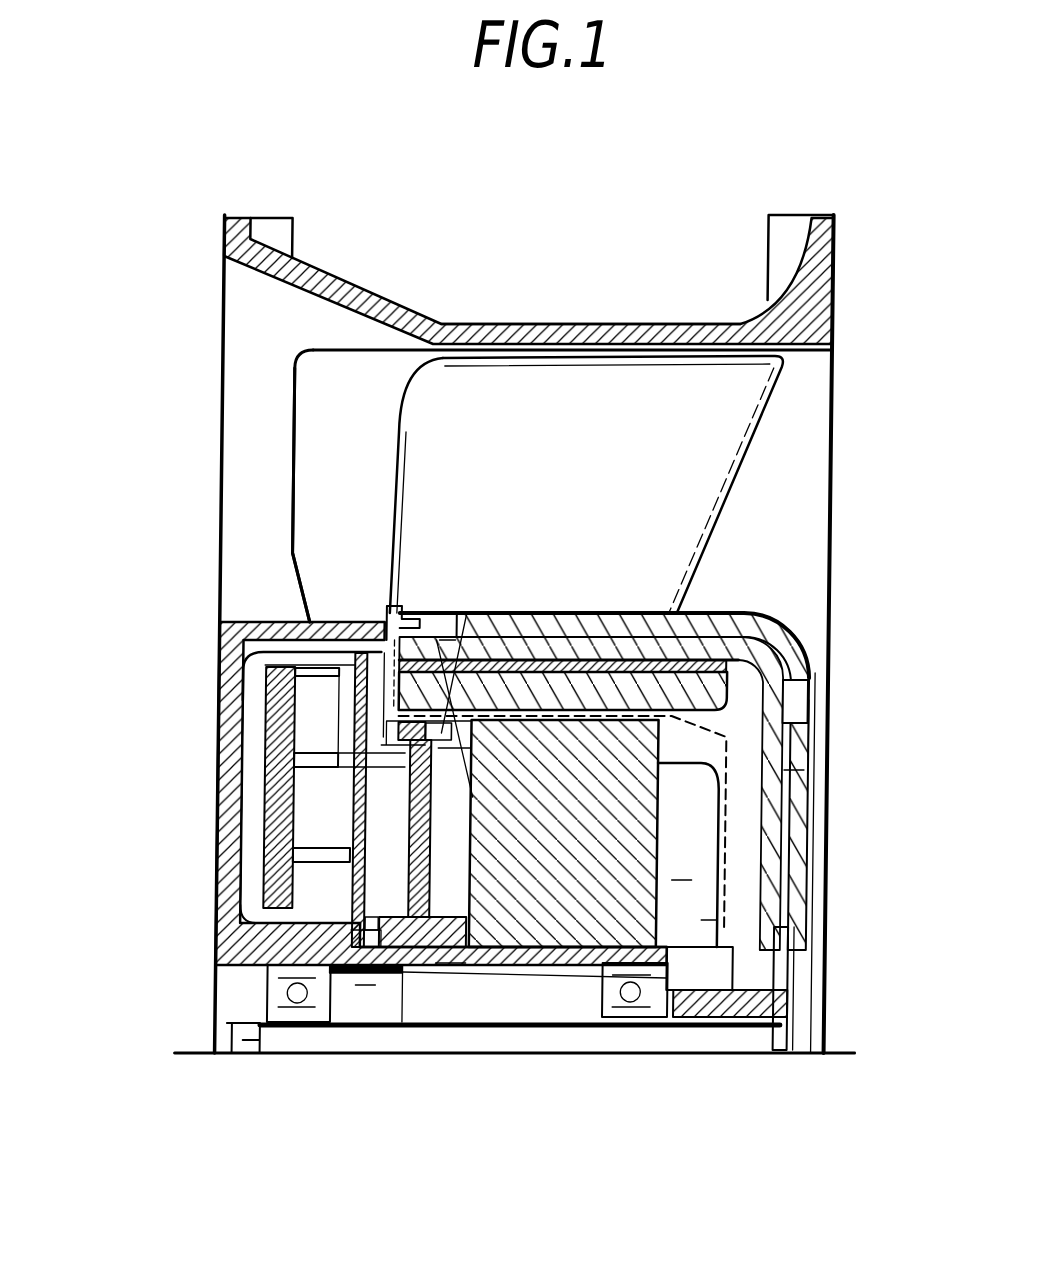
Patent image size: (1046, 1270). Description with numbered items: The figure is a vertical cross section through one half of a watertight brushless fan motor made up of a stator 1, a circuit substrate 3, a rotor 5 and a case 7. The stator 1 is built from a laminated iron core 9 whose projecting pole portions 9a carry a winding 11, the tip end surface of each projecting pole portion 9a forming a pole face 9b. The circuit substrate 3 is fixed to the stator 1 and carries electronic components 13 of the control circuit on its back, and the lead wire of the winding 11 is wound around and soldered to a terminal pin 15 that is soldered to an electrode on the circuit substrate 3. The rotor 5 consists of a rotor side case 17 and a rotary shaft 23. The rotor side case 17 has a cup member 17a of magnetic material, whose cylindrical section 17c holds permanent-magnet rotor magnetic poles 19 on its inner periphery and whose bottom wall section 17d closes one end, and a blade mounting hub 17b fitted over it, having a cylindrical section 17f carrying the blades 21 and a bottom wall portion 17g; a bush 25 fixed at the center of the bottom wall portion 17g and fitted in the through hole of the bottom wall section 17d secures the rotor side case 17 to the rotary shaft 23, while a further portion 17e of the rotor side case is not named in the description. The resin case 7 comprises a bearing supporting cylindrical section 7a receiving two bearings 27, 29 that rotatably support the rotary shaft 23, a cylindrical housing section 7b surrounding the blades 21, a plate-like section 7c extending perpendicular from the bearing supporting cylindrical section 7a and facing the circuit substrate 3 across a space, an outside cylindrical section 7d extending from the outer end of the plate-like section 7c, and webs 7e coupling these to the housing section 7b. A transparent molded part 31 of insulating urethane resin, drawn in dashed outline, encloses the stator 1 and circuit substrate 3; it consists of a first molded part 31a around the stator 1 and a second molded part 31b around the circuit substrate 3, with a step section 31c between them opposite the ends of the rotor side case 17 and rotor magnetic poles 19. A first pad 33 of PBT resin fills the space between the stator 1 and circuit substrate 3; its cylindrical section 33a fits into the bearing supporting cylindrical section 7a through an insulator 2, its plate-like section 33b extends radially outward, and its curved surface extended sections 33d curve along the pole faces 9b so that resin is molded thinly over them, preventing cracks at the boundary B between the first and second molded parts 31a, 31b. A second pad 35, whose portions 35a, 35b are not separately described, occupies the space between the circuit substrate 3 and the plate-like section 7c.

The stator 1 is at (485, 972).
The insulator 2 is at (368, 972).
The circuit substrate 3 is at (389, 628).
The rotor 5 is at (816, 637).
The case 7 is at (250, 408).
The bearing supporting cylindrical section 7a is at (512, 965).
The housing section 7b is at (506, 342).
The plate-like section 7c is at (246, 772).
The outside cylindrical section 7d is at (269, 622).
The webs 7e is at (220, 481).
The iron core 9 is at (654, 819).
The projecting pole portions 9a is at (605, 850).
The pole face 9b is at (672, 610).
The winding 11 is at (716, 927).
The electronic components 13 is at (310, 797).
The terminal pin 15 is at (407, 757).
The rotor side case 17 is at (673, 766).
The cup member 17a is at (810, 608).
The blade mounting hub 17b is at (792, 661).
The cylindrical section 17c is at (542, 700).
The bottom wall section 17d is at (686, 890).
The bracket lower portion 17e is at (798, 977).
The cylindrical section 17f is at (641, 615).
The bottom wall portion 17g is at (800, 783).
The rotor magnetic poles 19 is at (507, 614).
The blades 21 is at (617, 398).
The rotary shaft 23 is at (638, 1025).
The bush 25 is at (808, 1000).
The bearing 27 is at (282, 997).
The bearing 29 is at (649, 1010).
The molded part 31 is at (315, 744).
The first molded part 31a is at (548, 612).
The second molded part 31b is at (256, 722).
The step section 31c is at (424, 612).
The first pad 33 is at (452, 802).
The cylindrical section 33a is at (445, 972).
The plate-like section 33b is at (256, 1045).
The curved surface extended sections 33d is at (467, 613).
The second pad 35 is at (218, 847).
The yoke foot 35a is at (335, 962).
The yoke side wall 35b is at (270, 828).
The boundary B is at (446, 625).